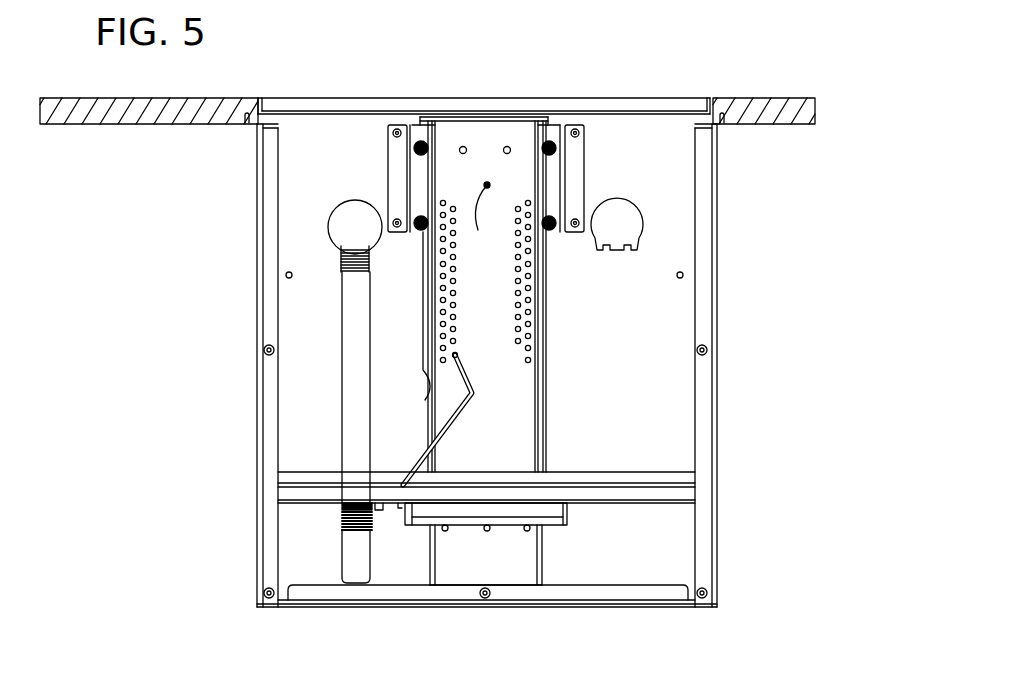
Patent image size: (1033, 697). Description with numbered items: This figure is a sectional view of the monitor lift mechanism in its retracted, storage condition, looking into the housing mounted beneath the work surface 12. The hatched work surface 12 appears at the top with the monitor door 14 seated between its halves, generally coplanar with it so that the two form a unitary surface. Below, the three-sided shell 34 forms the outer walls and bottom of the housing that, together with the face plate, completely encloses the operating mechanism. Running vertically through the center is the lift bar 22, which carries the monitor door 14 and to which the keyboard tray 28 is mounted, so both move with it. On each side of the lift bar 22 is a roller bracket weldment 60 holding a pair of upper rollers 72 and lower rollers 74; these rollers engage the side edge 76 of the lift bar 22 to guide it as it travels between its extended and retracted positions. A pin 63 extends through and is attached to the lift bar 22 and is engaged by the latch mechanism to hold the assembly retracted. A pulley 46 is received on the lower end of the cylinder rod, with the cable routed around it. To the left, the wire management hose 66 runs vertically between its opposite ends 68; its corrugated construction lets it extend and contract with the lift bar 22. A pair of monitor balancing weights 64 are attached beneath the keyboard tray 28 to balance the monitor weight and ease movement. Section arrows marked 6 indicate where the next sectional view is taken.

The section line 6 is at (363, 168).
The work surface 12 is at (767, 108).
The monitor door 14 is at (592, 107).
The lift bar 22 is at (500, 450).
The keyboard tray 28 is at (627, 482).
The three-sided shell 34 is at (673, 348).
The pulley 46 is at (417, 383).
The roller bracket weldment 60 is at (575, 160).
The pin 63 is at (485, 222).
The monitor balancing weights 64 is at (557, 522).
The wire management hose 66 is at (350, 350).
The opposite ends 68 is at (340, 262).
The upper rollers 72 is at (420, 143).
The lower rollers 74 is at (421, 230).
The side edge 76 is at (540, 395).